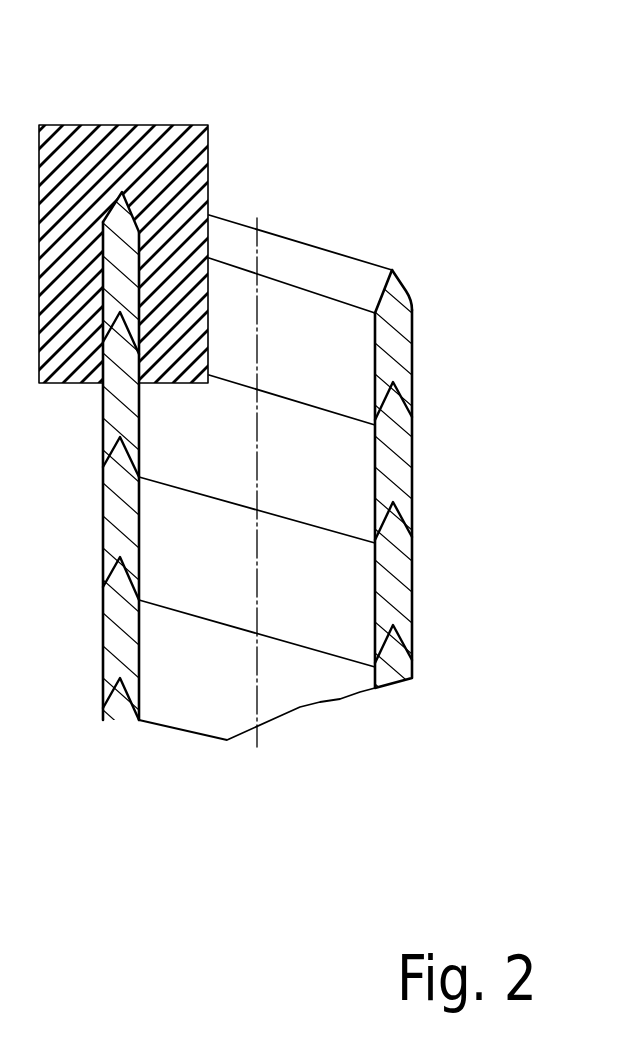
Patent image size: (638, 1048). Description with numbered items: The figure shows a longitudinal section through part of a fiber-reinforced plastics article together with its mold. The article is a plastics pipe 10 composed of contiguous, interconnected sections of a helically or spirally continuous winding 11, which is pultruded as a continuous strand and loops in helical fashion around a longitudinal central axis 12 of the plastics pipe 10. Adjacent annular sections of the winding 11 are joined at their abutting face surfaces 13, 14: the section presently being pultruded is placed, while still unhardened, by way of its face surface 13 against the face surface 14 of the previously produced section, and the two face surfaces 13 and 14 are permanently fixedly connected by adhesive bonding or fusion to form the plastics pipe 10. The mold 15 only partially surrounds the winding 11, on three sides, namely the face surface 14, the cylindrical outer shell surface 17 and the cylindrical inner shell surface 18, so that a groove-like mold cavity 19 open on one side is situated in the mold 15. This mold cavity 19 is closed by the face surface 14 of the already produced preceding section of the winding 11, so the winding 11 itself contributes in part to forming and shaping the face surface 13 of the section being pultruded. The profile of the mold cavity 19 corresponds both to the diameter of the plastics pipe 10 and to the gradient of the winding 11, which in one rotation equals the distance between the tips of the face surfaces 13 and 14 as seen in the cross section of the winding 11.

The plastics pipe 10 is at (438, 484).
The winding 11 is at (330, 366).
The longitudinal central axis 12 is at (257, 695).
The face surface 13 is at (108, 700).
The face surface 14 is at (403, 293).
The mold 15 is at (72, 147).
The cylindrical outer shell surface 17 is at (413, 362).
The cylindrical inner shell surface 18 is at (378, 378).
The mold cavity 19 is at (145, 175).